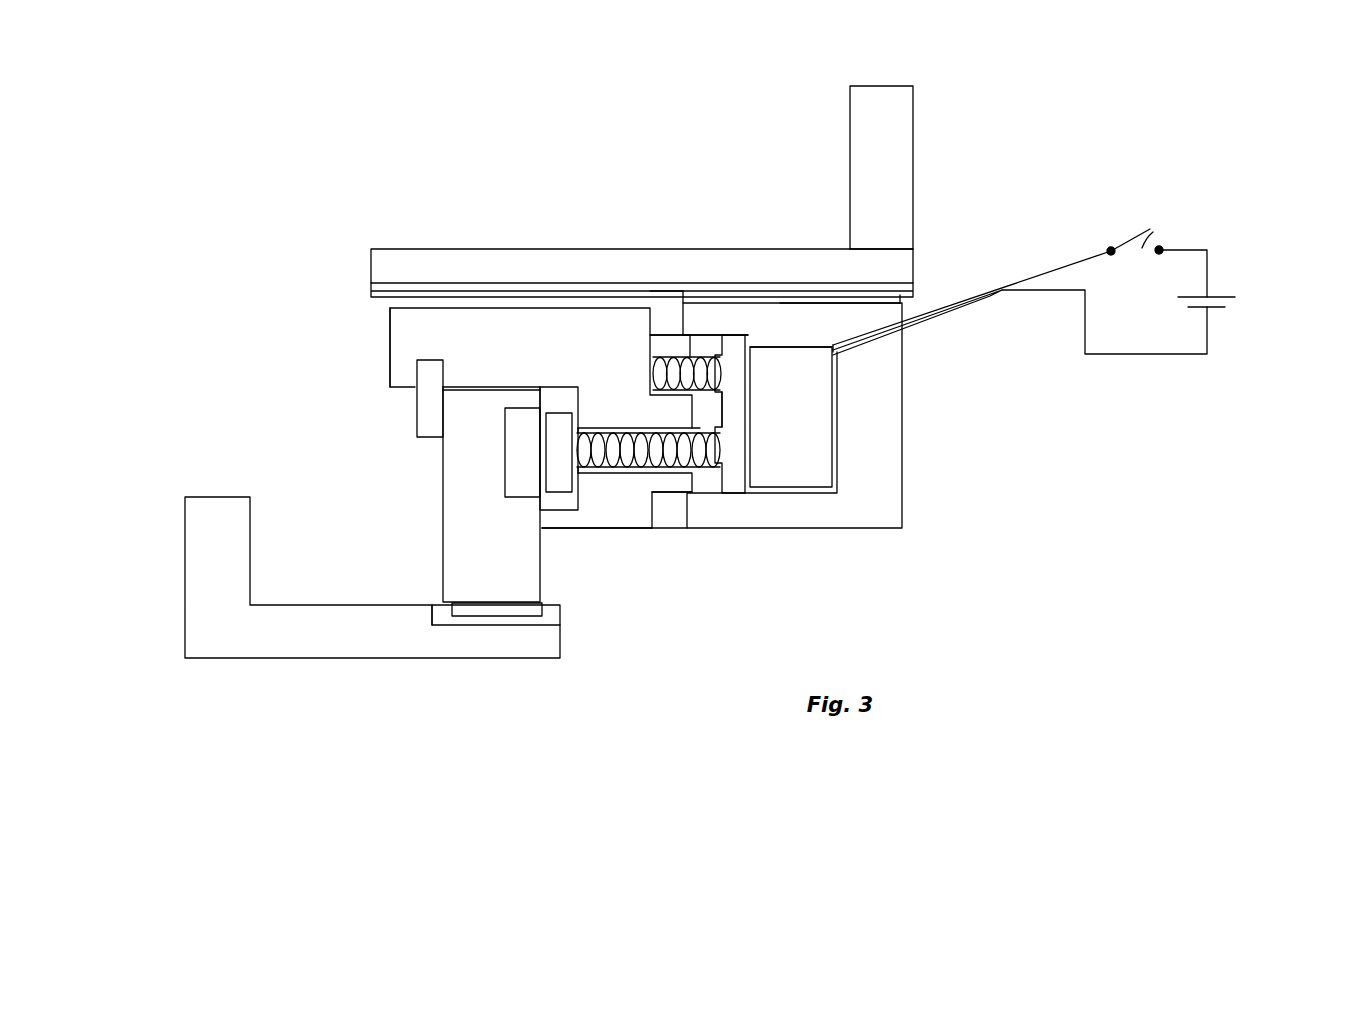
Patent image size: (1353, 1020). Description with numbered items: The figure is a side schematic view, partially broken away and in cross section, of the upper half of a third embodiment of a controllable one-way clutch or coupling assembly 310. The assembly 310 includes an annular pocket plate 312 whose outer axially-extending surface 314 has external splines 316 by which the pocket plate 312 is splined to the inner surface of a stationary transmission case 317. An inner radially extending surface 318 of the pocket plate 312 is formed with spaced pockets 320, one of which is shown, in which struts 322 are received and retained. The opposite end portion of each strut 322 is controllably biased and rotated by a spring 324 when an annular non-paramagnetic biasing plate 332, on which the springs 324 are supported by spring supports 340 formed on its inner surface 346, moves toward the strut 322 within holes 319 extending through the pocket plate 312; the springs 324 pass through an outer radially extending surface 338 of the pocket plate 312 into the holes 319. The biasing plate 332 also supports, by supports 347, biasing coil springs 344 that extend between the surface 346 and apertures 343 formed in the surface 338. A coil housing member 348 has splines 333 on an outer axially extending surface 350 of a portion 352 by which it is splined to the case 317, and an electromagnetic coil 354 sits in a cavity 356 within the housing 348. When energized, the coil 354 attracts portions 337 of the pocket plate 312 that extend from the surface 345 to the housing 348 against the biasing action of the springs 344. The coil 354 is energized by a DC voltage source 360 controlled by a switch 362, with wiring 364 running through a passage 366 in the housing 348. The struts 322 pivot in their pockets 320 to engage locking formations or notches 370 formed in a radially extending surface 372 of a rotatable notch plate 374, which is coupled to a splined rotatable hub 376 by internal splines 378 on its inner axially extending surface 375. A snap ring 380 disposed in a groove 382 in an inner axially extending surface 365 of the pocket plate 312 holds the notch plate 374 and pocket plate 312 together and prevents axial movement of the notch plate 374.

The controllable one-way clutch or coupling assembly 310 is at (955, 440).
The pocket plate 312 is at (648, 532).
The outer axially-extending surface 314 is at (392, 300).
The external splines 316 is at (420, 292).
The stationary transmission case 317 is at (875, 86).
The inner radially extending surface 318 is at (475, 390).
The holes 319 is at (655, 440).
The pocket 320 is at (603, 530).
The strut 322 is at (558, 412).
The spring 324 is at (637, 468).
The biasing plate 332 is at (735, 497).
The splines 333 is at (858, 292).
The portions of the plate 337 is at (698, 358).
The outer radially extending surface 338 is at (692, 497).
The spring supports 340 is at (730, 463).
The apertures 343 is at (658, 358).
The biasing coil springs 344 is at (685, 340).
The surface 345 is at (655, 322).
The inner surface of the plate 346 is at (730, 398).
The supports 347 is at (763, 347).
The coil housing member 348 is at (868, 528).
The outer axially extending surface 350 is at (875, 313).
The portion of the member 352 is at (823, 325).
The electromagnetic coil 354 is at (830, 420).
The cavity 356 is at (838, 390).
The DC voltage source 360 is at (1220, 290).
The switch 362 is at (1152, 232).
The wiring 364 is at (1022, 275).
The inner axially extending surface 365 is at (470, 387).
The passage 366 is at (862, 343).
The locking formations or notches 370 is at (520, 492).
The radially extending surface 372 is at (505, 462).
The notch plate 374 is at (443, 590).
The inner axially extending surface 375 is at (510, 600).
The splined rotatable hub 376 is at (185, 585).
The internal splines 378 is at (497, 618).
The snap ring 380 is at (430, 440).
The groove 382 is at (390, 378).